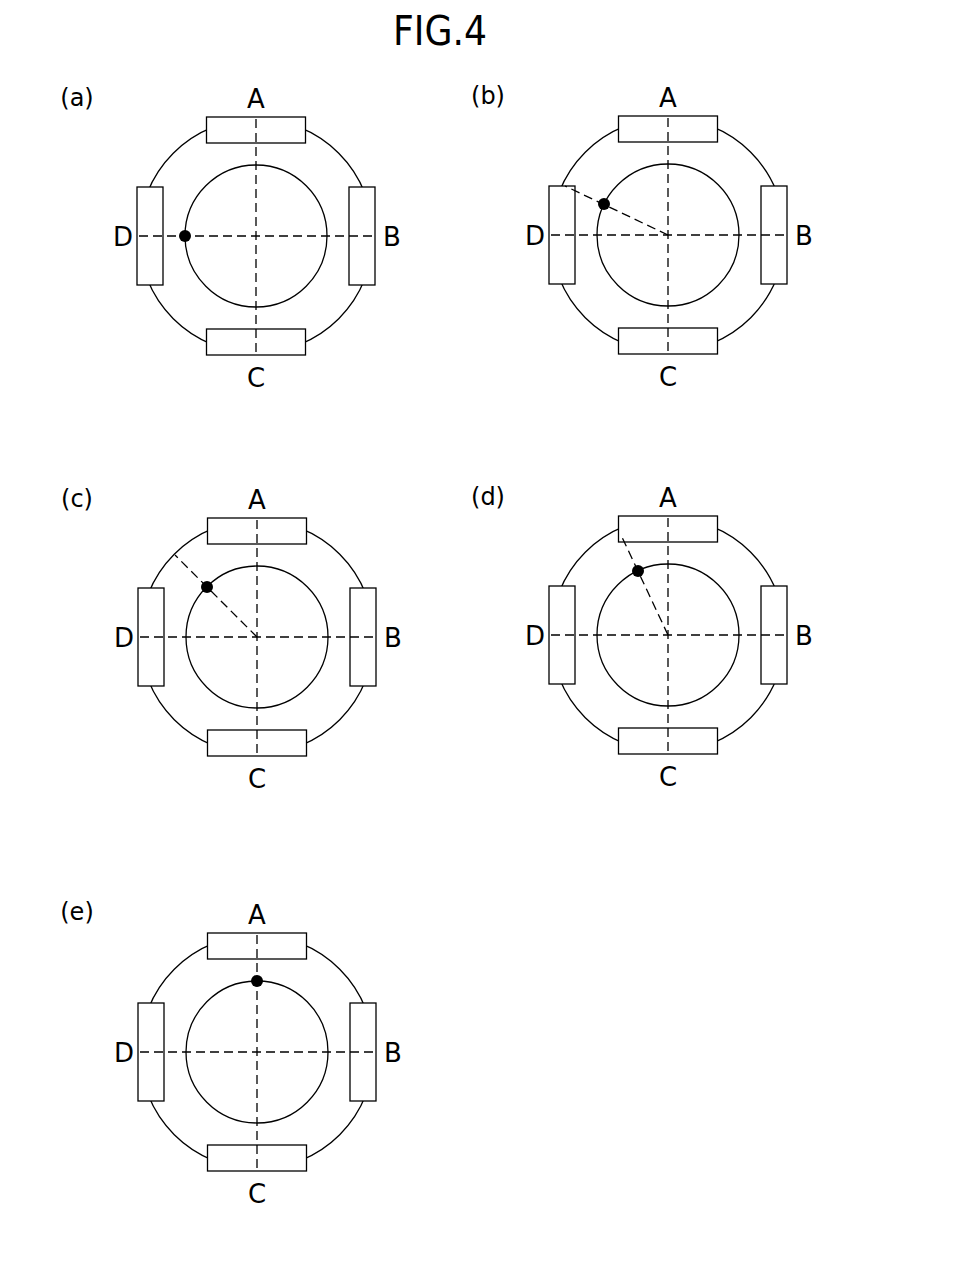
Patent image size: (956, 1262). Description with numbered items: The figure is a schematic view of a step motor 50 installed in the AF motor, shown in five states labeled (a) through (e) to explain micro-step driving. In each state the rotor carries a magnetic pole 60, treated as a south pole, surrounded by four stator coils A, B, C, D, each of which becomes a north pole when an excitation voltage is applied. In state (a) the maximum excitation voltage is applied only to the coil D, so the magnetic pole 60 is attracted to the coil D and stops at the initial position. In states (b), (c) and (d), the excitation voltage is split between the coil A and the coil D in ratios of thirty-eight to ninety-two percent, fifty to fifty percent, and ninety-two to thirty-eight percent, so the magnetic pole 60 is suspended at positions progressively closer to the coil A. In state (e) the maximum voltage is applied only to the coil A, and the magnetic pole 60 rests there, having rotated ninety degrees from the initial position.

The step motor 50 is at (337, 153).
The magnetic pole 60 is at (392, 549).
The coil A is at (462, 521).
The coil B is at (581, 643).
The coil C is at (462, 768).
The coil D is at (344, 643).